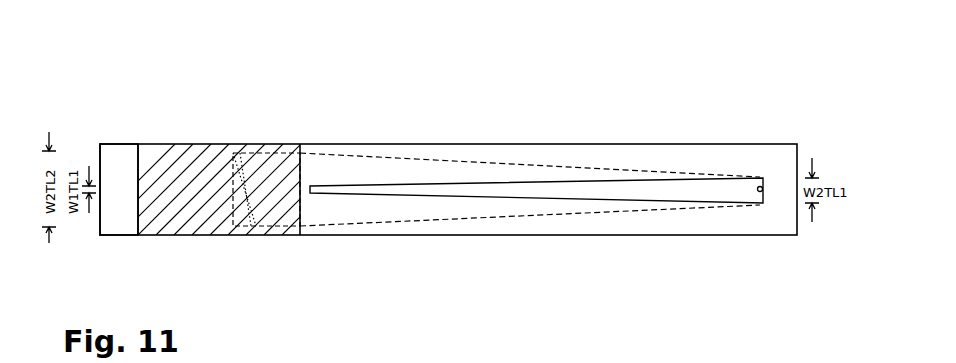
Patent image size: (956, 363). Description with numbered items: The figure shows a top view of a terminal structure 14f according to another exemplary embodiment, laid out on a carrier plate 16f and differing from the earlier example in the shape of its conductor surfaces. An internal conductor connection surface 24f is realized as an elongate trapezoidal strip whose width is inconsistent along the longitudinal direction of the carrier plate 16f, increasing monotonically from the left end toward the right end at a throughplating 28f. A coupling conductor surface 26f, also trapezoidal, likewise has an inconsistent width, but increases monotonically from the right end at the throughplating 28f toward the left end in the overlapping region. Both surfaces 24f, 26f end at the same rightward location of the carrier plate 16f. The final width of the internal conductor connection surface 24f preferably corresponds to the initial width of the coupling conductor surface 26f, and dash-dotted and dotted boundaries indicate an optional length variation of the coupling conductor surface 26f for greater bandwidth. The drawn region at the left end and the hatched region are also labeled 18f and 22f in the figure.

The terminal structure 14f is at (400, 89).
The carrier plate 16f is at (118, 160).
The second end portion 18f is at (119, 189).
The hatched reinforcing region 22f is at (202, 158).
The internal conductor connection surface 24f is at (662, 187).
The coupling conductor surface 26f is at (458, 215).
The throughplating 28f is at (761, 186).